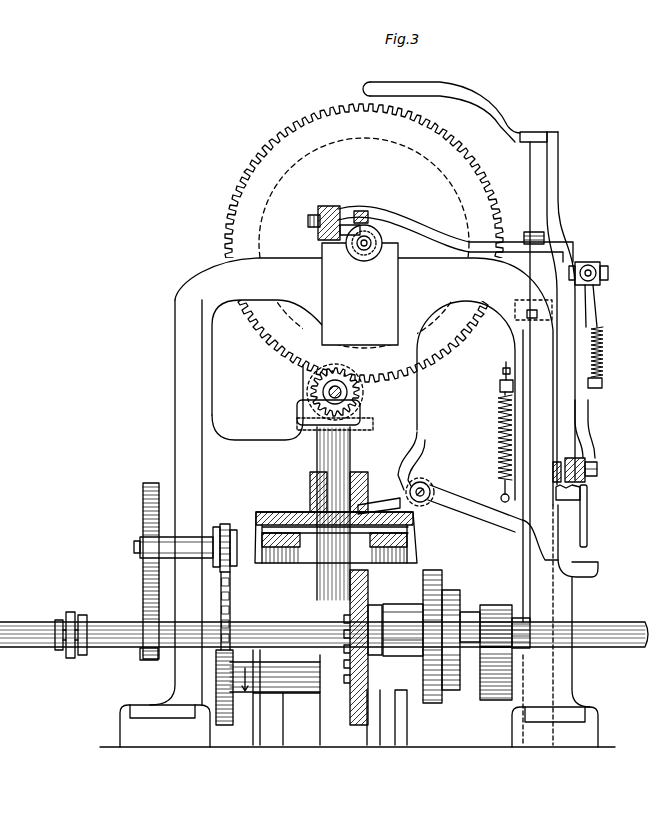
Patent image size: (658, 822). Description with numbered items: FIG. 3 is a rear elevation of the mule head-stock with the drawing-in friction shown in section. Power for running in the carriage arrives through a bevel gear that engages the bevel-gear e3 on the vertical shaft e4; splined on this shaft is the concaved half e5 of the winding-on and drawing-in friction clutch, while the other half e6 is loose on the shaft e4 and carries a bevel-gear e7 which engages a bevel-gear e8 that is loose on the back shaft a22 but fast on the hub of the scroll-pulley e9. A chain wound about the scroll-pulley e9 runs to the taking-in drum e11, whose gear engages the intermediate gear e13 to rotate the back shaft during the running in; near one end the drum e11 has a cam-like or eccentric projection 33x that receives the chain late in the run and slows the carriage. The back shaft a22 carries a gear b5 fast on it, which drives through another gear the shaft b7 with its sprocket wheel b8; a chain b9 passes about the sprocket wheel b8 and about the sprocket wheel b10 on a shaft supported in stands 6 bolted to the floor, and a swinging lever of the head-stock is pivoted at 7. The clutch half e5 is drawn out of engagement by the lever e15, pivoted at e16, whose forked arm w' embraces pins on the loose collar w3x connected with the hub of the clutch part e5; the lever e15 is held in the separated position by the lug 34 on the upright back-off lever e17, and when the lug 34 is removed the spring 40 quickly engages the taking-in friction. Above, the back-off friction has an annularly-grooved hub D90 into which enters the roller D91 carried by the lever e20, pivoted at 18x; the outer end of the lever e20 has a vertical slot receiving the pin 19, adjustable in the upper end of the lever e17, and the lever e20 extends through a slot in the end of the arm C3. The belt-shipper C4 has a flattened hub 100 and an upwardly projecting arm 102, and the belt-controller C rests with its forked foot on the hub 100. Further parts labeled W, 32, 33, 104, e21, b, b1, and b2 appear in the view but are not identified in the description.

The frame W is at (197, 292).
The belt-controller C is at (473, 352).
The arm C3 is at (526, 233).
The belt-shipper C4 is at (500, 386).
The annularly-grooved hub D90 is at (362, 263).
The roller or stud D91 is at (363, 222).
The pivot 18x is at (322, 206).
The lever e20 is at (438, 247).
The pin 19 is at (591, 262).
The upright back-off lever e17 is at (594, 320).
The lug 34 is at (580, 492).
The arm 102 is at (590, 432).
The flattened hub 100 is at (593, 461).
The guide bracket 104 is at (545, 303).
The spring 40 is at (496, 420).
The large gear wheel 32 is at (268, 341).
The pinion 33 is at (306, 380).
The bevel-gear e3 is at (360, 416).
The loose collar w3x is at (308, 478).
The projecting arm w' is at (379, 487).
The bevel-gear e7 is at (312, 578).
The pivot e16 is at (428, 485).
The lever e15 is at (498, 522).
The bracket hook e21 is at (490, 603).
The concaved half of friction-clutch e5 is at (286, 512).
The friction-clutch half e6 is at (290, 566).
The bevel-gear e8 is at (382, 600).
The scroll-pulley e9 is at (434, 604).
The intermediate gear e13 is at (498, 703).
The taking-in drum e11 is at (406, 717).
The cam-like or eccentric projection 33x is at (401, 745).
The stands 6 is at (283, 735).
The vertical shaft e4 is at (323, 595).
The back shaft a22 is at (40, 610).
The gear wheel b is at (143, 502).
The shaft b7 is at (134, 548).
The gear b5 is at (140, 652).
The sprocket b2 is at (80, 615).
The sprocket flange b1 is at (72, 655).
The chain or sprocket wheel b8 is at (222, 524).
The chain b9 is at (232, 526).
The sprocket or chain wheel b10 is at (232, 726).
The pivot 7 is at (12, 366).